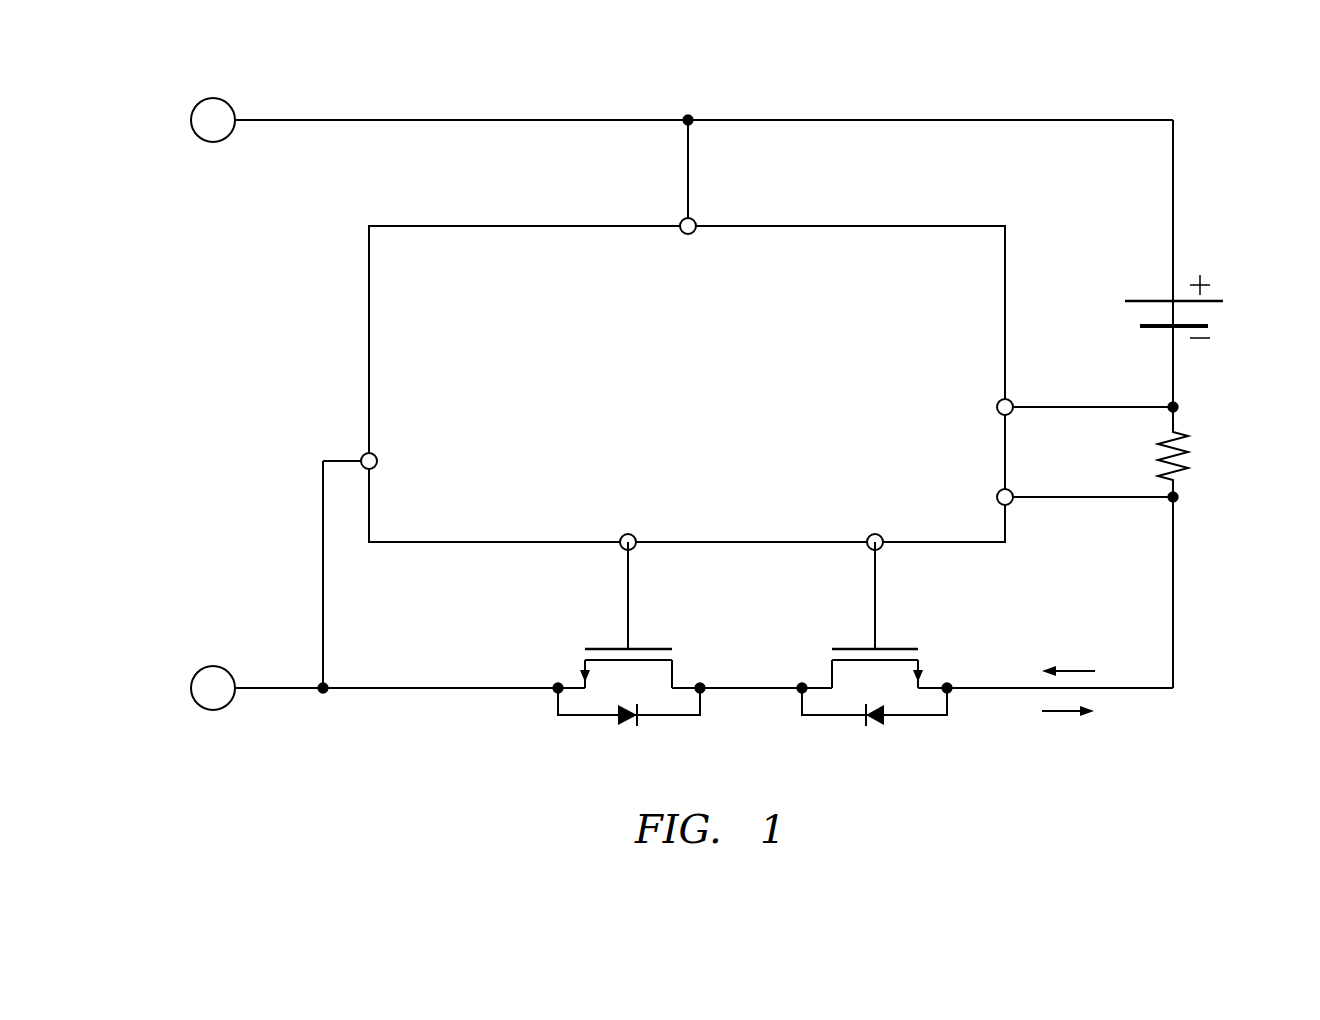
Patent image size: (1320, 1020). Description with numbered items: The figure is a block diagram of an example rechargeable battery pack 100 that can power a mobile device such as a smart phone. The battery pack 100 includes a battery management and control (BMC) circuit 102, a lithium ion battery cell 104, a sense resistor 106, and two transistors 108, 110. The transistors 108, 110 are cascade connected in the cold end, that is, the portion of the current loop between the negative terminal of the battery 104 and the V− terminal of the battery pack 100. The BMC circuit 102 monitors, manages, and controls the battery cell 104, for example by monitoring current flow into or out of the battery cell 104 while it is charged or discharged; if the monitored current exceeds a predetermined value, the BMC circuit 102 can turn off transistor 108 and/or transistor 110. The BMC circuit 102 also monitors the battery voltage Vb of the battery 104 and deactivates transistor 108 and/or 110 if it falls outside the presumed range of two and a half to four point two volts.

The rechargeable battery pack 100 is at (1194, 77).
The battery management and control (BMC) circuit 102 is at (931, 271).
The lithium ion battery cell 104 is at (1150, 300).
The sense resistor 106 is at (1185, 460).
The transistor 108 is at (652, 648).
The transistor 110 is at (900, 648).